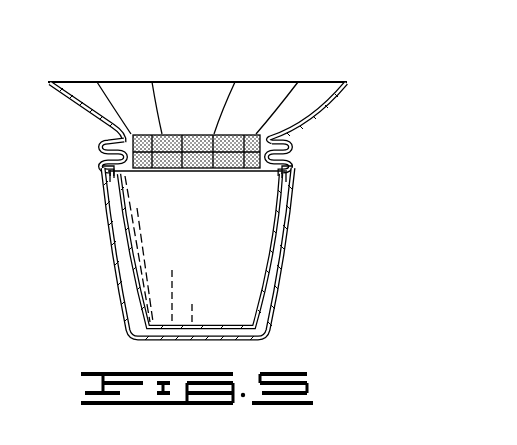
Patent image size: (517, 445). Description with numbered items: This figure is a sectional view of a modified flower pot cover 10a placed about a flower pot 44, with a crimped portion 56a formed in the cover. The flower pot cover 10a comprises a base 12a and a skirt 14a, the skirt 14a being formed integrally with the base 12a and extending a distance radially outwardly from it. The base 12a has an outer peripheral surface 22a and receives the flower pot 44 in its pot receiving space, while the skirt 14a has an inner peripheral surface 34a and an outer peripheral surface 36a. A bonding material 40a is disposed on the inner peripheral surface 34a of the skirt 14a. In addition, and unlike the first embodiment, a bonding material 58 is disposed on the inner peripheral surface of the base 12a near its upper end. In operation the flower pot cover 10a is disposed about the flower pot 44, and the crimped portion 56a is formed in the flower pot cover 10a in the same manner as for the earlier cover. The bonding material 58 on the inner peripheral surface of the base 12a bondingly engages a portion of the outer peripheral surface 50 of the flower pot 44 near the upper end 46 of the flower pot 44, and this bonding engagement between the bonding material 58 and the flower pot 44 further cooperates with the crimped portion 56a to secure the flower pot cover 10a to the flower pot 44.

The flower pot cover 10a is at (332, 137).
The base 12a is at (279, 280).
The skirt 14a is at (340, 90).
The outer peripheral surface 22a is at (290, 213).
The inner peripheral surface 34a is at (67, 95).
The outer peripheral surface 36a is at (72, 112).
The bonding material 40a is at (200, 134).
The flower pot 44 is at (132, 240).
The upper end 46 is at (120, 173).
The outer peripheral surface 50 is at (128, 255).
The crimped portion 56a is at (127, 130).
The bonding material 58 is at (106, 184).